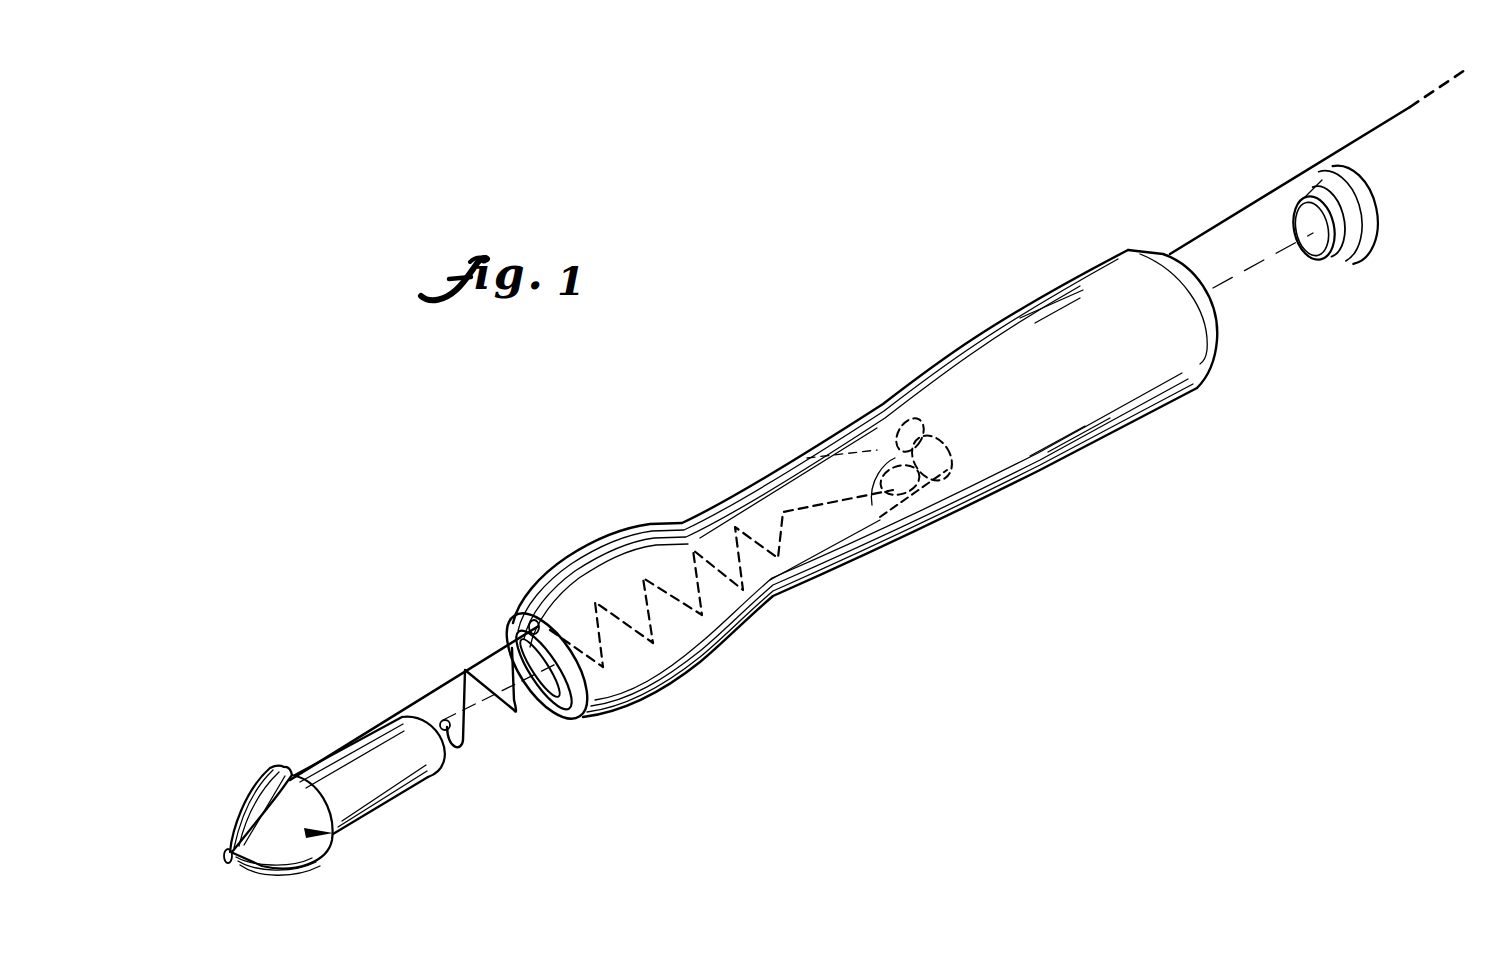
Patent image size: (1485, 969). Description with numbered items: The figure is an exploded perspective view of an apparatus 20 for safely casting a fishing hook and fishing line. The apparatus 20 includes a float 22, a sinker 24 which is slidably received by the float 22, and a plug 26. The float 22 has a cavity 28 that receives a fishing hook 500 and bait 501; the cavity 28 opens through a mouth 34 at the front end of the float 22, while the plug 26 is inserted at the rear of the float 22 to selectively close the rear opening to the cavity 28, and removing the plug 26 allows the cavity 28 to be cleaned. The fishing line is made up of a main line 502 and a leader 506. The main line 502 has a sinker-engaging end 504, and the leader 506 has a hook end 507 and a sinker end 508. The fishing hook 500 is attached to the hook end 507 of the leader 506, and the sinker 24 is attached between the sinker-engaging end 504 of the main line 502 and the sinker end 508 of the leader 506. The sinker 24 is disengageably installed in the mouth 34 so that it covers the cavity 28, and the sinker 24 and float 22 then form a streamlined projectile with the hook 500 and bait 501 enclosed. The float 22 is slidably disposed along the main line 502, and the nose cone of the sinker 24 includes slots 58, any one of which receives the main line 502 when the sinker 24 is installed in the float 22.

The apparatus 20 is at (699, 322).
The float 22 is at (896, 399).
The sinker 24 is at (350, 830).
The plug 26 is at (1357, 260).
The cavity 28 is at (797, 458).
The mouth 34 is at (563, 693).
The slots 58 is at (284, 764).
The fishing hook 500 is at (913, 447).
The bait 501 is at (883, 478).
The main line 502 is at (1220, 221).
The sinker-engaging end 504 is at (226, 856).
The leader 506 is at (510, 710).
The hook end 507 is at (800, 517).
The sinker end 508 is at (445, 728).